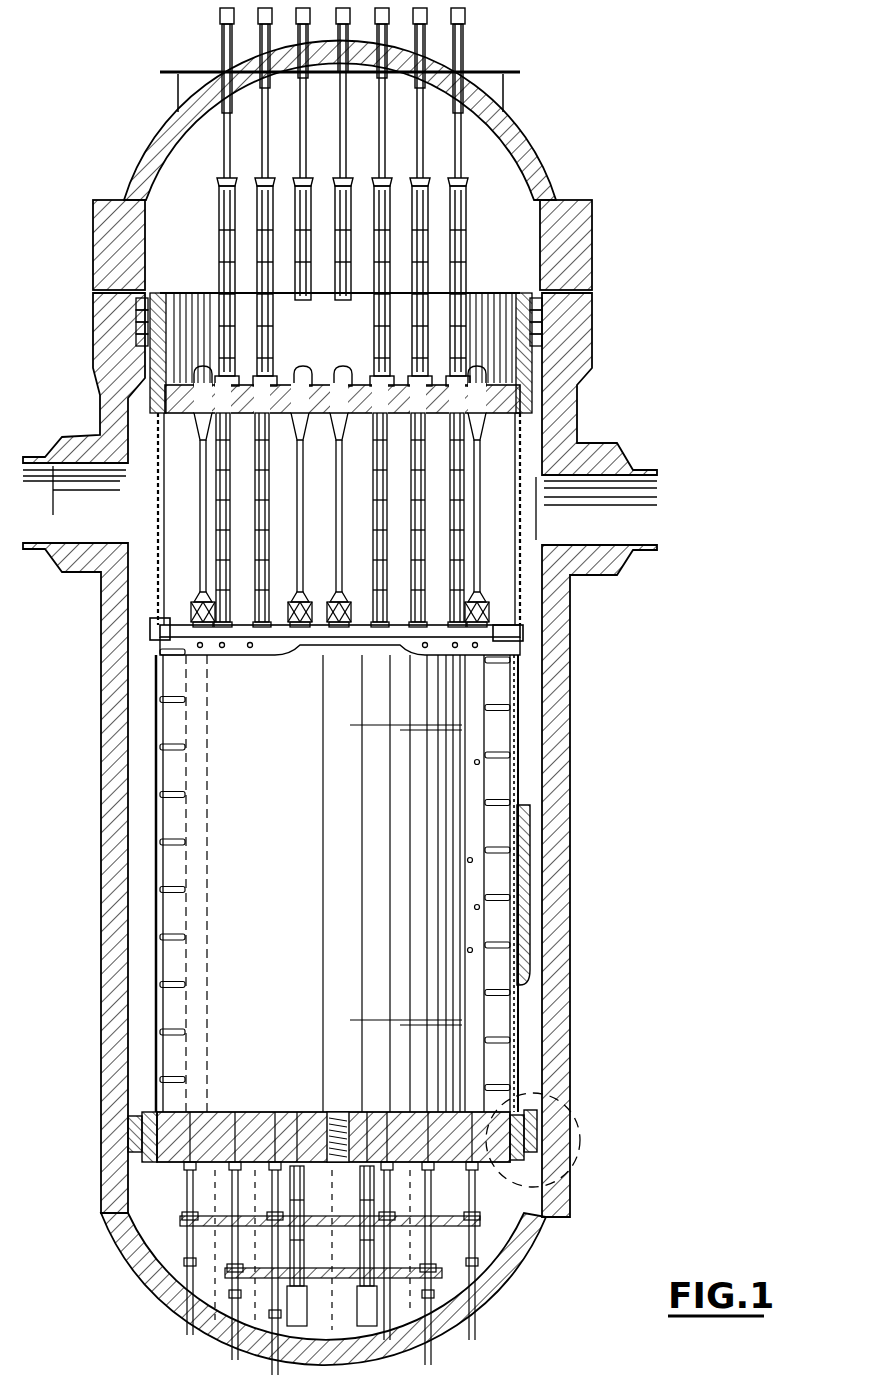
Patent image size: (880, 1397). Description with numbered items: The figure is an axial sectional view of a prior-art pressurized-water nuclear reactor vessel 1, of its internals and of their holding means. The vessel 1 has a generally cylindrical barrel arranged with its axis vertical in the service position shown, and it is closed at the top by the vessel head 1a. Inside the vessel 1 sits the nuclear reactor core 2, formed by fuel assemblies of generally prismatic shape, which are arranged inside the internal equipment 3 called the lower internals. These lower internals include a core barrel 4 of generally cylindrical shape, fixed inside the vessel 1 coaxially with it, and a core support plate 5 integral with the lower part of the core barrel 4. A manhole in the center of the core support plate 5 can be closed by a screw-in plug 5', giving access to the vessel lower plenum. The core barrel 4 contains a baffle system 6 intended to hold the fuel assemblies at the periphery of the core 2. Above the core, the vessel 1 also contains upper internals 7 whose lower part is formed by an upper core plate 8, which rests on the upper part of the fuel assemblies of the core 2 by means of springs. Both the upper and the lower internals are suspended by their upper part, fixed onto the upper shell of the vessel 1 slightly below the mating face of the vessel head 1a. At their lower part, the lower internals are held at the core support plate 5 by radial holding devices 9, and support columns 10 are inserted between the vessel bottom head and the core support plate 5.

The vessel 1 is at (586, 969).
The vessel head 1a is at (572, 246).
The nuclear reactor core 2 is at (650, 1138).
The internal equipment (lower internals) 3 is at (524, 730).
The core barrel 4 is at (516, 1062).
The core support plate 5 is at (333, 1105).
The screw-in plug 5' is at (316, 1105).
The baffle system 6 is at (563, 872).
The upper internals 7 is at (470, 458).
The upper core plate 8 is at (238, 640).
The radial holding devices 9 is at (132, 1158).
The support columns 10 is at (362, 1317).